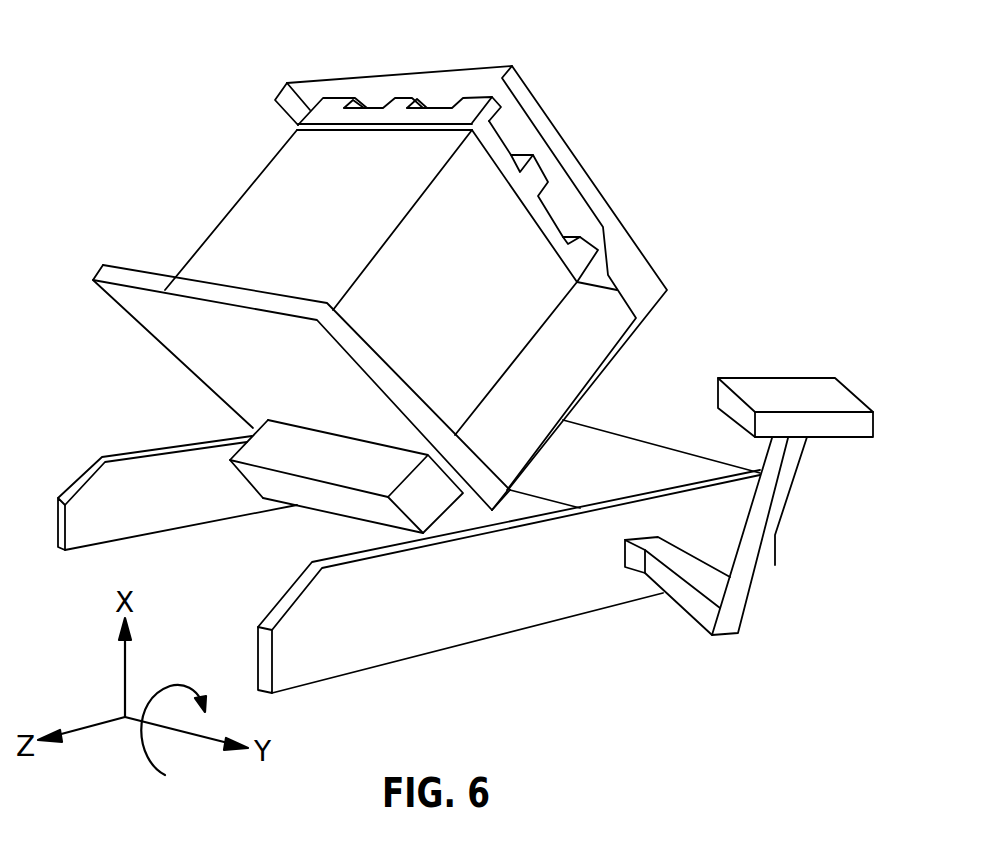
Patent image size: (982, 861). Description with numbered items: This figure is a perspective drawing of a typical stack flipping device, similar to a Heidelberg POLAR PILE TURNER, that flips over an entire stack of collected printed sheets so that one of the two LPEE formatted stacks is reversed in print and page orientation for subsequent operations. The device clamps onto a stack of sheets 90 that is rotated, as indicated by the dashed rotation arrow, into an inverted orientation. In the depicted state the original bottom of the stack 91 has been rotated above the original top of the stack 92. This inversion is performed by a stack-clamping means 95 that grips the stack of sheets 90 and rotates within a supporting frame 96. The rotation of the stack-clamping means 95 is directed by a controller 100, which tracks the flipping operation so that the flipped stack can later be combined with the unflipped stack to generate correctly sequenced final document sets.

The stack of sheets 90 is at (305, 215).
The original bottom of the stack 91 is at (375, 128).
The original top of the stack 92 is at (233, 303).
The stack-clamping means 95 is at (638, 270).
The supporting frame 96 is at (392, 643).
The controller 100 is at (838, 398).